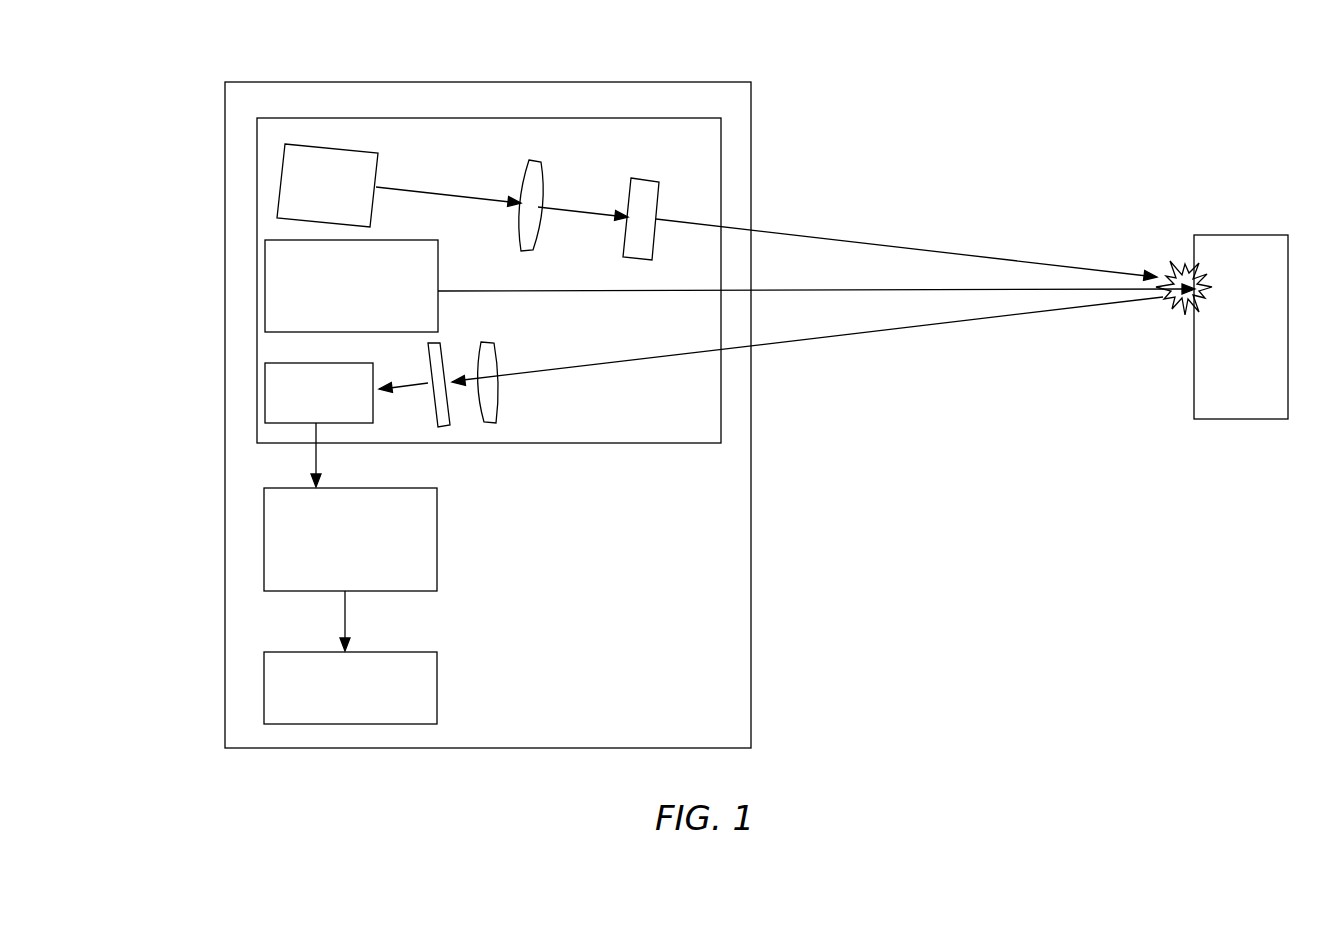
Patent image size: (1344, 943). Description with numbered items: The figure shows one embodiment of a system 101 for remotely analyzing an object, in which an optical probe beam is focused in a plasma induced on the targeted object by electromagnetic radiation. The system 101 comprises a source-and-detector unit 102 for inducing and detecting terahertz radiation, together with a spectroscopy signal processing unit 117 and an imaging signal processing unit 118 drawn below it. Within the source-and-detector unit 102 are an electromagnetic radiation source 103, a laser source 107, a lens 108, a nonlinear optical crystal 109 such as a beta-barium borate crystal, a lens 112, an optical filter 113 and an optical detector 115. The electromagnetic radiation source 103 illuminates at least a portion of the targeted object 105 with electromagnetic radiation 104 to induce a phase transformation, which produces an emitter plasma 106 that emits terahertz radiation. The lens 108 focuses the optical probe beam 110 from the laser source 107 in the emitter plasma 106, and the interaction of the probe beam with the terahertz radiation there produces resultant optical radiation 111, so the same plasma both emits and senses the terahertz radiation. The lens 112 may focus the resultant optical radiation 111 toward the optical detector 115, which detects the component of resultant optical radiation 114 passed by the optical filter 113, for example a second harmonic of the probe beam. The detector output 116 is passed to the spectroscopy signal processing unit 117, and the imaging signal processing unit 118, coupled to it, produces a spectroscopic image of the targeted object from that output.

The system 101 is at (752, 95).
The source-and-detector unit 102 is at (445, 118).
The electromagnetic radiation source 103 is at (438, 260).
The electromagnetic radiation 104 is at (773, 292).
The targeted object 105 is at (1233, 233).
The emitter plasma 106 is at (1180, 268).
The laser source 107 is at (377, 167).
The lens 108 is at (541, 170).
The nonlinear optical crystal 109 is at (643, 175).
The optical probe beam 110 is at (805, 235).
The resultant optical radiation 111 is at (912, 327).
The lens 112 is at (493, 360).
The optical filter 113 is at (452, 410).
The resultant optical radiation 114 is at (407, 393).
The optical detector 115 is at (267, 385).
The detector output signal 116 is at (316, 463).
The spectroscopy signal processing unit 117 is at (437, 530).
The imaging signal processing unit 118 is at (437, 677).